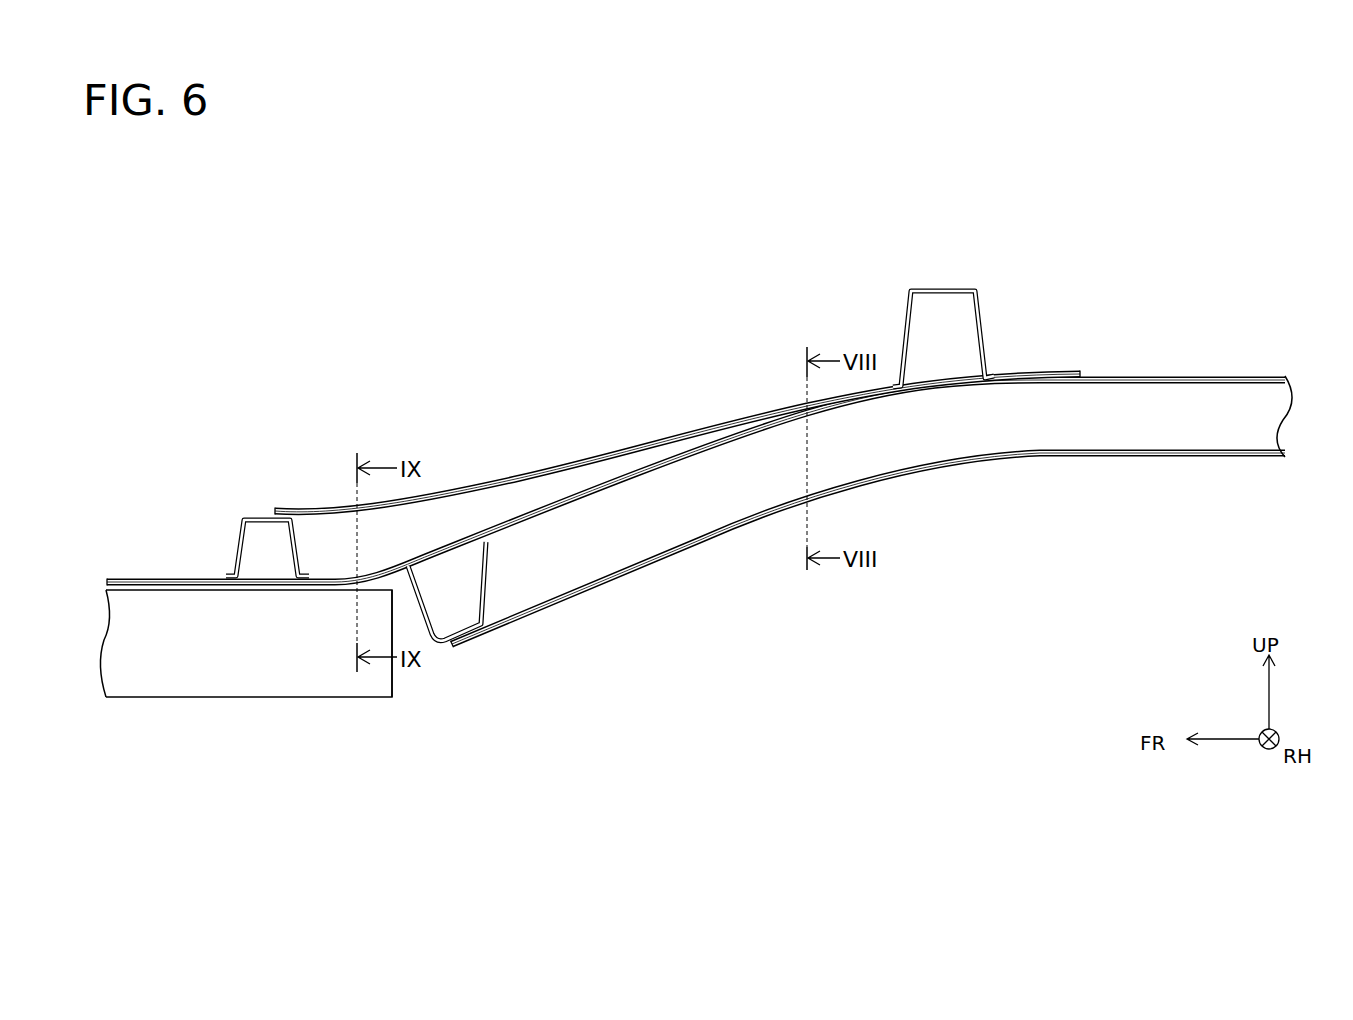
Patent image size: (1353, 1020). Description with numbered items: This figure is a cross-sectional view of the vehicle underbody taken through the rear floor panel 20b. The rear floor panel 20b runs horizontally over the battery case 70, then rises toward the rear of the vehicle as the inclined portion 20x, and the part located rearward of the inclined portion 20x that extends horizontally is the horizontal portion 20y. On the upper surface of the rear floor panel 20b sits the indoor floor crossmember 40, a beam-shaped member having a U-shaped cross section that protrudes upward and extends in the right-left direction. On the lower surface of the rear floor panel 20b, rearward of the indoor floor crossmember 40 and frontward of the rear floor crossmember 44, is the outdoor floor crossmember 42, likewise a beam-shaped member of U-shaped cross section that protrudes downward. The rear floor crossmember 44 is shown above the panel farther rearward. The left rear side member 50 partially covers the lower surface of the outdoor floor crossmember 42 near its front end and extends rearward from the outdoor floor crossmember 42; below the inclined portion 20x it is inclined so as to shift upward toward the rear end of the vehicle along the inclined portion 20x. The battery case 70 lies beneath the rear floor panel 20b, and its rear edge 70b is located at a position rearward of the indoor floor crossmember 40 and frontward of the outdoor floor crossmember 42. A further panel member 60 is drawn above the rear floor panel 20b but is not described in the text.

The rear floor panel 20b is at (152, 577).
The inclined portion 20x is at (700, 447).
The horizontal portion 20y is at (1063, 383).
The indoor floor crossmember 40 is at (262, 517).
The outdoor floor crossmember 42 is at (427, 617).
The rear floor crossmember 44 is at (940, 289).
The left rear side member 50 is at (593, 587).
The upper reinforcement panel 60 is at (472, 480).
The battery case 70 is at (283, 683).
The rear edge 70b is at (393, 678).